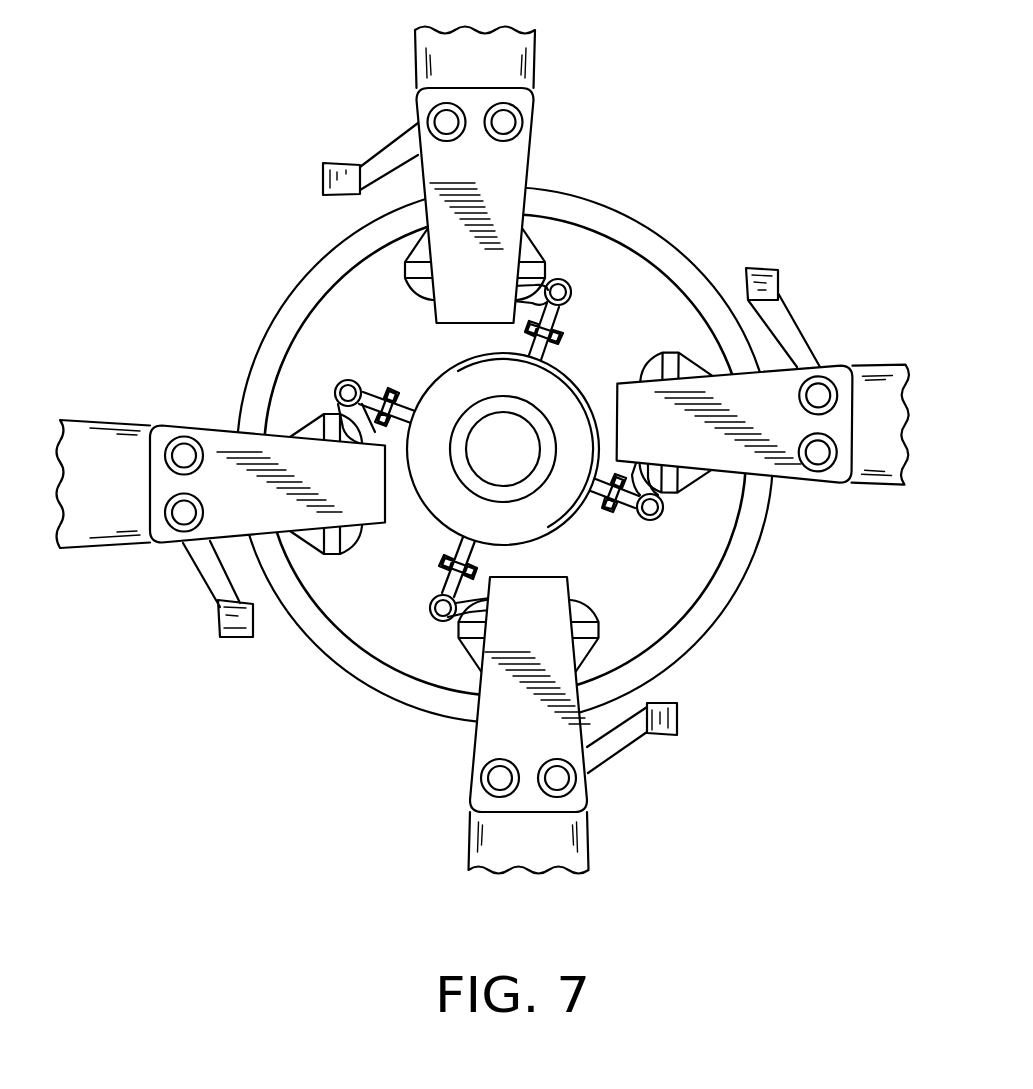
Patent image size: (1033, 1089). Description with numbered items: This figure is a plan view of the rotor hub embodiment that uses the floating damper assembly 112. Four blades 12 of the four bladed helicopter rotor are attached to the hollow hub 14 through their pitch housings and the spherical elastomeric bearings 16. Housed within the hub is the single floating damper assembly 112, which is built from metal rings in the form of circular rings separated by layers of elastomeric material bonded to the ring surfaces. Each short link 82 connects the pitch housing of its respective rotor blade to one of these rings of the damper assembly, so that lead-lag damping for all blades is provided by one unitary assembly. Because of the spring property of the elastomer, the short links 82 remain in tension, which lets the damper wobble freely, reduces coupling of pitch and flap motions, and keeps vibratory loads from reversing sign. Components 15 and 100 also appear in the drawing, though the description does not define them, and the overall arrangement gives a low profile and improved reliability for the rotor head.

The blade 12 is at (483, 450).
The hub 14 is at (330, 663).
The lever 15 is at (680, 728).
The spherical elastomeric bearing 16 is at (678, 659).
The short link 82 is at (366, 390).
The mounting plate 100 is at (465, 758).
The floating damper assembly 112 is at (567, 388).